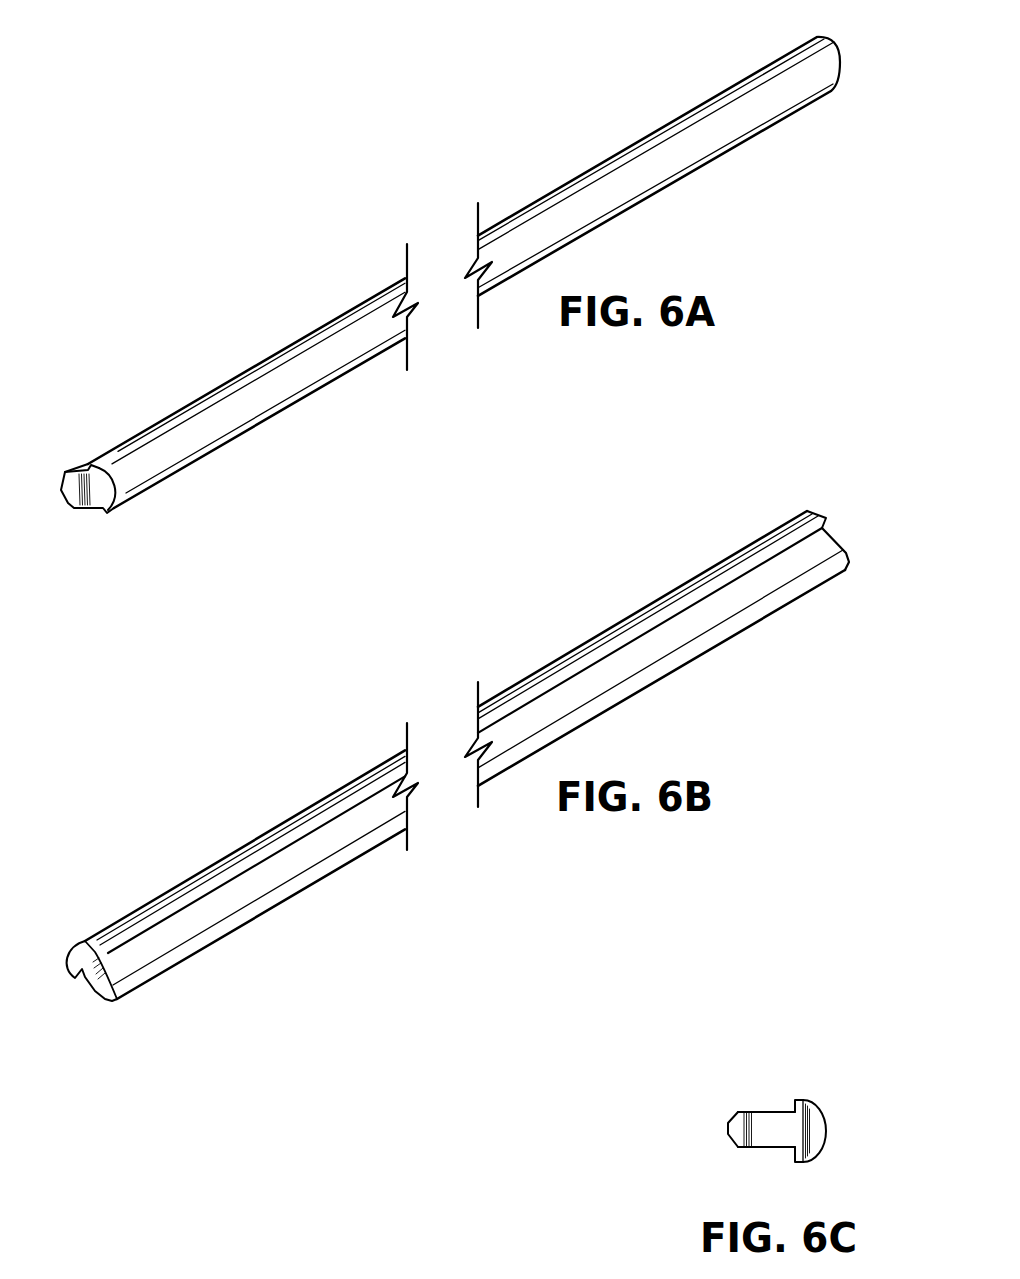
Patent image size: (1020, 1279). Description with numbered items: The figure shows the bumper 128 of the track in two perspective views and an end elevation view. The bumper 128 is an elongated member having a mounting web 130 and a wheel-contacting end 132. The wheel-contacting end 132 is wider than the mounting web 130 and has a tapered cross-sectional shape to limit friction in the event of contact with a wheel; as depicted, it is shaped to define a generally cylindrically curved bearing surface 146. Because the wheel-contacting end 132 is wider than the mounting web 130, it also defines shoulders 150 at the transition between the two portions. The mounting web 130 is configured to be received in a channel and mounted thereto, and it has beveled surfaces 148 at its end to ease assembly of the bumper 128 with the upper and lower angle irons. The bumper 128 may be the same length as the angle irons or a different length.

In FIG. 6A, the bumper 128 is at (167, 252).
In FIG. 6B, the bumper 128 is at (167, 785).
In FIG. 6C, the bumper 128 is at (727, 1047).
In FIG. 6A, the mounting web 130 is at (74, 492).
In FIG. 6B, the mounting web 130 is at (825, 548).
In FIG. 6C, the mounting web 130 is at (768, 1132).
In FIG. 6A, the wheel-contacting end 132 is at (147, 463).
In FIG. 6B, the wheel-contacting end 132 is at (808, 520).
In FIG. 6C, the wheel-contacting end 132 is at (836, 1106).
In FIG. 6C, the bearing surface 146 is at (826, 1147).
In FIG. 6C, the beveled surfaces 148 is at (735, 1113).
In FIG. 6C, the shoulders 150 is at (786, 1101).